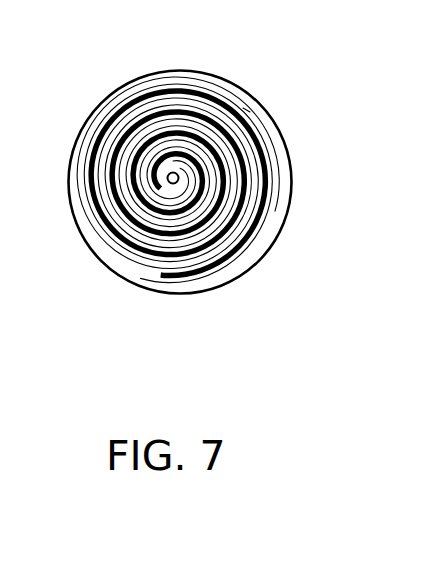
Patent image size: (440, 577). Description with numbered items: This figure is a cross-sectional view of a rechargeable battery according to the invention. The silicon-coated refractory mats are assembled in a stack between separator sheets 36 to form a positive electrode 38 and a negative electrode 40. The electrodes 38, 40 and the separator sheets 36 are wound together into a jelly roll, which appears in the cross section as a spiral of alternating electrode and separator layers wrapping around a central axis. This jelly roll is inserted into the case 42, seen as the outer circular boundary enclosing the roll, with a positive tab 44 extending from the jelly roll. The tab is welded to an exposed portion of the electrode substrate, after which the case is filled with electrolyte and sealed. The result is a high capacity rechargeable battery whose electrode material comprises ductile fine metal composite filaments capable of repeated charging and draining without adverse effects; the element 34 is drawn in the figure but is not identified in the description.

The spiral electrode band 34 is at (253, 172).
The spiral channel 36 is at (222, 88).
The spiral wall 38 is at (243, 108).
The outer spiral rim 40 is at (285, 222).
The central aperture 42 is at (174, 172).
The outer housing 44 is at (99, 105).